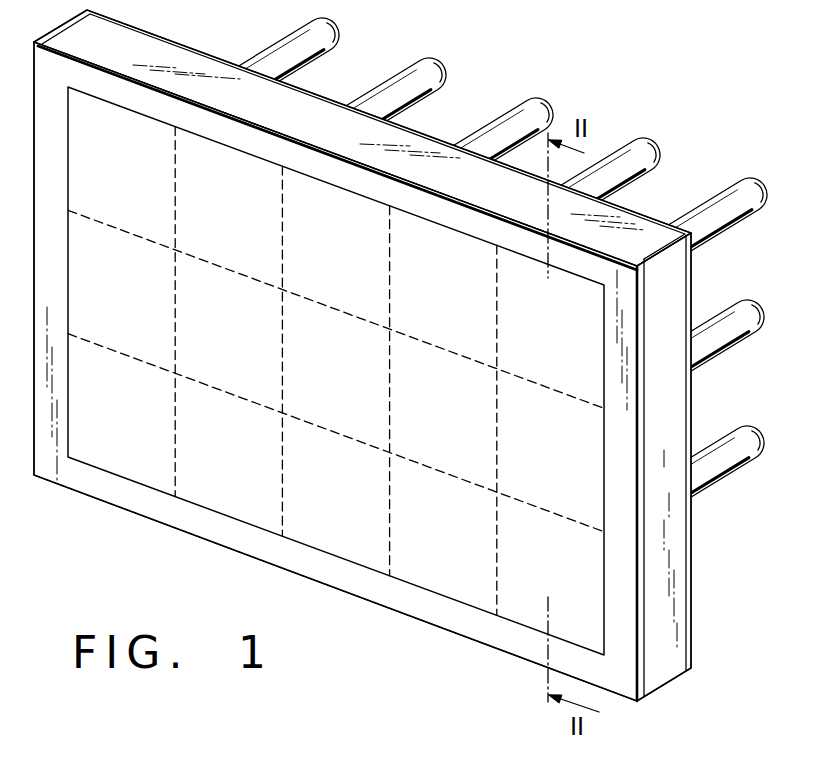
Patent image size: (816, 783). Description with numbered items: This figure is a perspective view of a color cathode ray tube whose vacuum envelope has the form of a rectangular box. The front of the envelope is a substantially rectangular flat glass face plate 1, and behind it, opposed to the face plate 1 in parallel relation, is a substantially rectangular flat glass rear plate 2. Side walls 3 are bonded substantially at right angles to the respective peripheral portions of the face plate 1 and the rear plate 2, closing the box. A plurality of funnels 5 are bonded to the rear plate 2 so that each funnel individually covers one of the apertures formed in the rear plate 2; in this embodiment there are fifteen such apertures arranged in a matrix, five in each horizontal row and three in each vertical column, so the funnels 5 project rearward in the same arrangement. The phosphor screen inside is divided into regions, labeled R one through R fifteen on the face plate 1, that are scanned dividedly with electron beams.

The face plate 1 is at (387, 610).
The rear plate 2 is at (339, 98).
The side walls 3 is at (670, 682).
The funnels 5 is at (512, 102).